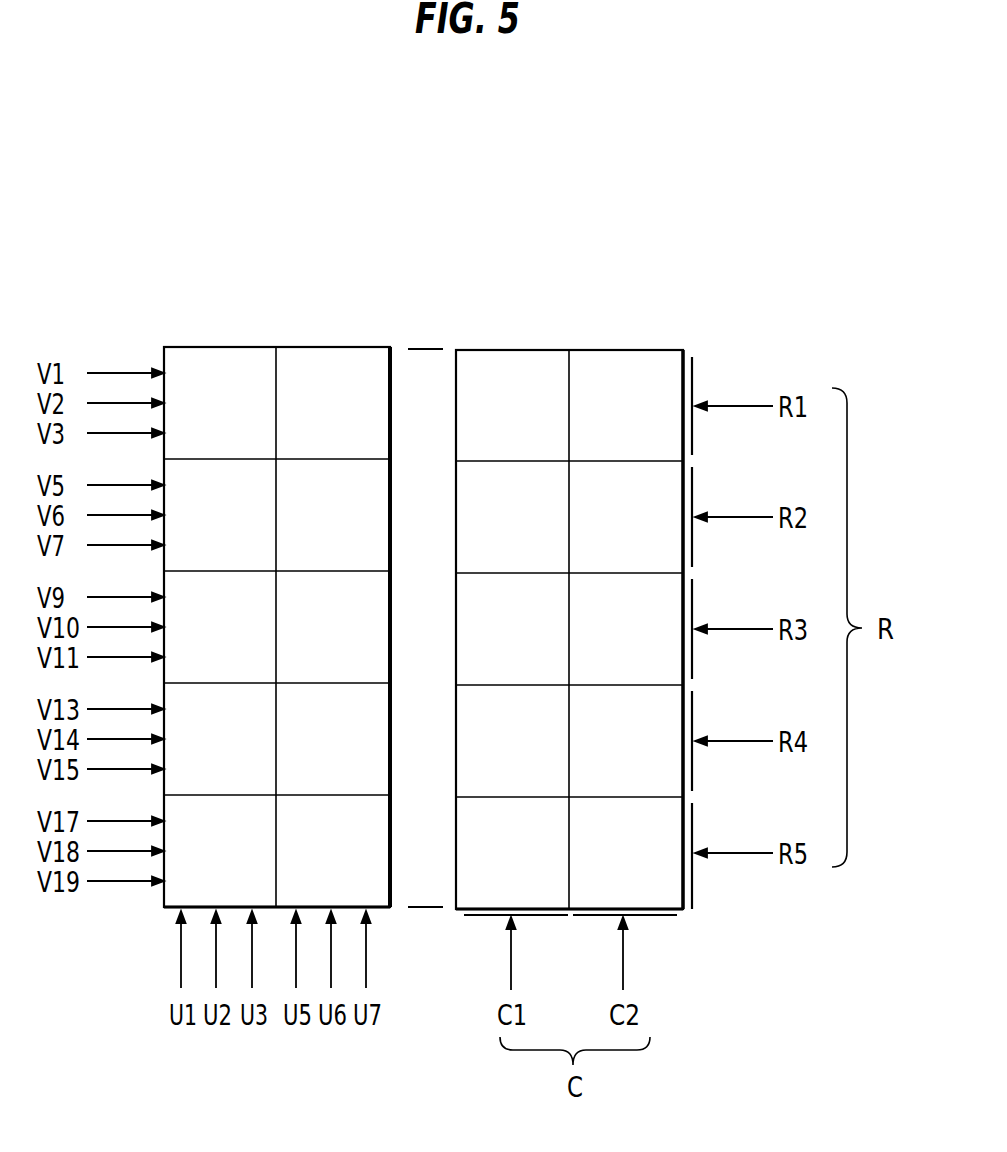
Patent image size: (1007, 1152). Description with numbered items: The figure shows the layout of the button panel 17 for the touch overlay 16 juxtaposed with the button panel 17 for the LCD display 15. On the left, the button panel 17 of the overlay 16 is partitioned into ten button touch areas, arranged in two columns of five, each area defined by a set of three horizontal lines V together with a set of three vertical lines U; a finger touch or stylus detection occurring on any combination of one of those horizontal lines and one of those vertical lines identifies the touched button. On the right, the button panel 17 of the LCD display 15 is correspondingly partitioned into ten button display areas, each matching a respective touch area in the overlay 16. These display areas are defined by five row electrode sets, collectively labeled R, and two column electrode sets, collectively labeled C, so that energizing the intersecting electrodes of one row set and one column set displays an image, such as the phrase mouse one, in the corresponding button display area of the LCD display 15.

The LCD display 15 is at (503, 350).
The touch overlay 16 is at (212, 347).
The button panel 17 is at (658, 298).